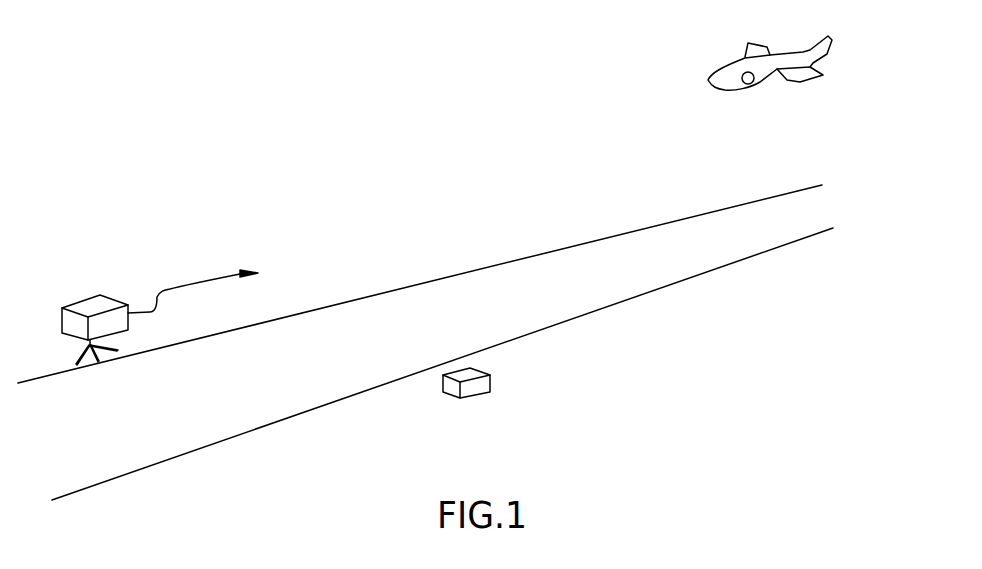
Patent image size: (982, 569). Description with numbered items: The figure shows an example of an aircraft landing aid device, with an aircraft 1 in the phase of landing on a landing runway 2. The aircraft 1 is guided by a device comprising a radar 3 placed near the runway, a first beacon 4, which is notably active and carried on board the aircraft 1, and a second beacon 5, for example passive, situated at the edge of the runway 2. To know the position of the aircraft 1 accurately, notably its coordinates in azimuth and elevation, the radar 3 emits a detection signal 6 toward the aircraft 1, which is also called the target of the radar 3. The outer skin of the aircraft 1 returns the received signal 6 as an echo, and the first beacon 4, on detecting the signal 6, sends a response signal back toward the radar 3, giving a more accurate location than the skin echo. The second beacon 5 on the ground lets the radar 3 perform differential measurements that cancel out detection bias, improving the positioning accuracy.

The aircraft 1 is at (770, 62).
The landing runway 2 is at (645, 275).
The radar 3 is at (92, 295).
The first beacon 4 is at (755, 87).
The second beacon 5 is at (475, 388).
The detection signal 6 is at (208, 277).